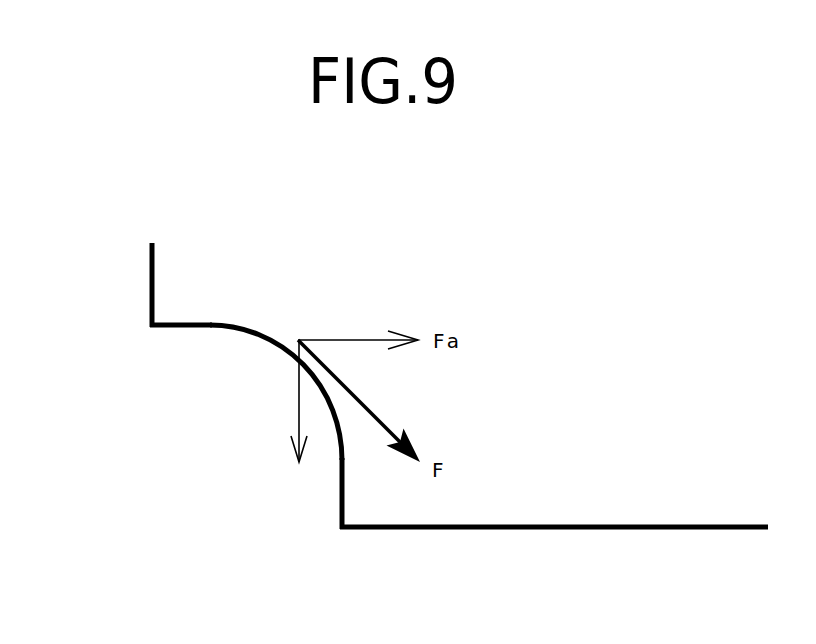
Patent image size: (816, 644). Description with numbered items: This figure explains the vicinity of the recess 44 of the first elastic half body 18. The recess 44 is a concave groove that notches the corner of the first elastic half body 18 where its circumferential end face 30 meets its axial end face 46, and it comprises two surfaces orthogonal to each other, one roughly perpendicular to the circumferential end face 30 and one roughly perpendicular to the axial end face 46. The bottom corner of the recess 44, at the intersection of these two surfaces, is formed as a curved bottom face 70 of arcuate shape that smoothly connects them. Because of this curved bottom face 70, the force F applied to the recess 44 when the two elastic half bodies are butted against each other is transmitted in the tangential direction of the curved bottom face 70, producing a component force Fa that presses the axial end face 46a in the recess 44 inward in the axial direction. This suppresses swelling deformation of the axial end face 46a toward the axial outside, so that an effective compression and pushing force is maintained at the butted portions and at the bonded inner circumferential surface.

The first elastic half body 18 is at (165, 264).
The axial end face 46 is at (152, 305).
The curved bottom face 70 is at (278, 347).
The axial end face in the recess 46a is at (340, 490).
The circumferential end face 30 is at (478, 529).
The recess 44 is at (192, 404).